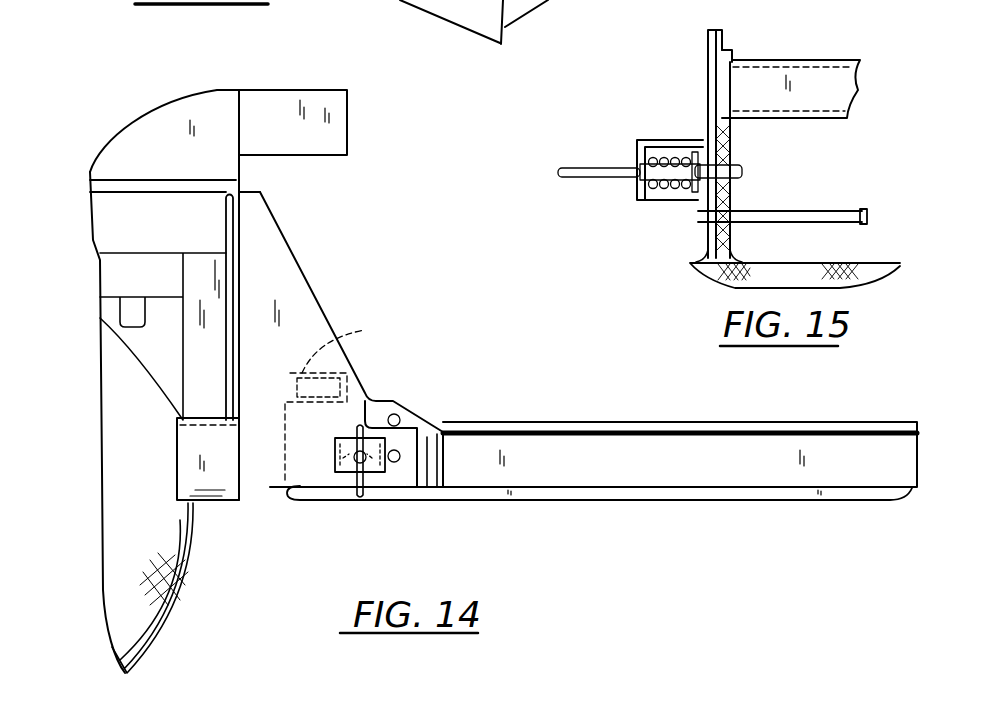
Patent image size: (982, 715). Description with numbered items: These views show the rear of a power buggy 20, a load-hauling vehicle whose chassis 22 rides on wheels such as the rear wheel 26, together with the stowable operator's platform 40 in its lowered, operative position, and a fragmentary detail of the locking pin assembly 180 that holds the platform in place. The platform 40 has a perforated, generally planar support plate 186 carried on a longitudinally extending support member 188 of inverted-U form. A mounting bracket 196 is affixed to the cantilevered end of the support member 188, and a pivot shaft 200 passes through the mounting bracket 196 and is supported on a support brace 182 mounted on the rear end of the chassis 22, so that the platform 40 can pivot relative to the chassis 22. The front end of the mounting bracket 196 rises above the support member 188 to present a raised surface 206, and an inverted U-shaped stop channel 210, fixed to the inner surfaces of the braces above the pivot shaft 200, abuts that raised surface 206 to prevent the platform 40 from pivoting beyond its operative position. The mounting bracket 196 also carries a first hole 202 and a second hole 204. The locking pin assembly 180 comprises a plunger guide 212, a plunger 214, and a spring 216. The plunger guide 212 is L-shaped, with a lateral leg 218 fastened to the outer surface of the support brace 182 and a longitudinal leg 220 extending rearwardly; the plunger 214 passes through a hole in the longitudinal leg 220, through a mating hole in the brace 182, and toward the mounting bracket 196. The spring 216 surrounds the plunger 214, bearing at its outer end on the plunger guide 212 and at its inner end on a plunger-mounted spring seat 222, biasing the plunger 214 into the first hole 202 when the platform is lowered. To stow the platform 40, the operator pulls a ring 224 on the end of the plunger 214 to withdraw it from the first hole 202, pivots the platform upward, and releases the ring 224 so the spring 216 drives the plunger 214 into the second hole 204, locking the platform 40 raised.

In FIG. 14, the power buggy 20 is at (86, 160).
In FIG. 14, the chassis 22 is at (208, 218).
In FIG. 14, the rear wheel 26 is at (185, 585).
In FIG. 14, the operator's platform 40 is at (580, 385).
In FIG. 15, the operator's platform 40 is at (710, 283).
In FIG. 14, the locking pin assembly 180 is at (318, 452).
In FIG. 15, the locking pin assembly 180 is at (622, 118).
In FIG. 14, the first support brace 182 is at (278, 300).
In FIG. 15, the first support brace 182 is at (706, 47).
In FIG. 14, the support plate 186 is at (690, 390).
In FIG. 14, the first support member 188 is at (715, 492).
In FIG. 15, the first support member 188 is at (858, 242).
In FIG. 14, the mounting bracket 196 is at (418, 413).
In FIG. 15, the mounting bracket 196 is at (733, 190).
In FIG. 14, the pivot shaft 200 is at (396, 463).
In FIG. 15, the pivot shaft 200 is at (852, 208).
In FIG. 15, the first hole 202 is at (744, 168).
In FIG. 14, the second hole 204 is at (396, 412).
In FIG. 14, the raised surface 206 is at (368, 363).
In FIG. 15, the raised surface 206 is at (735, 52).
In FIG. 14, the stop channel 210 is at (352, 337).
In FIG. 15, the stop channel 210 is at (827, 60).
In FIG. 14, the plunger guide 212 is at (324, 466).
In FIG. 15, the plunger guide 212 is at (647, 128).
In FIG. 14, the plunger 214 is at (354, 464).
In FIG. 15, the plunger 214 is at (640, 178).
In FIG. 15, the spring 216 is at (668, 190).
In FIG. 15, the lateral leg 218 is at (674, 140).
In FIG. 15, the longitudinal leg 220 is at (637, 143).
In FIG. 15, the spring seat 222 is at (693, 195).
In FIG. 14, the ring 224 is at (359, 486).
In FIG. 15, the ring 224 is at (568, 166).